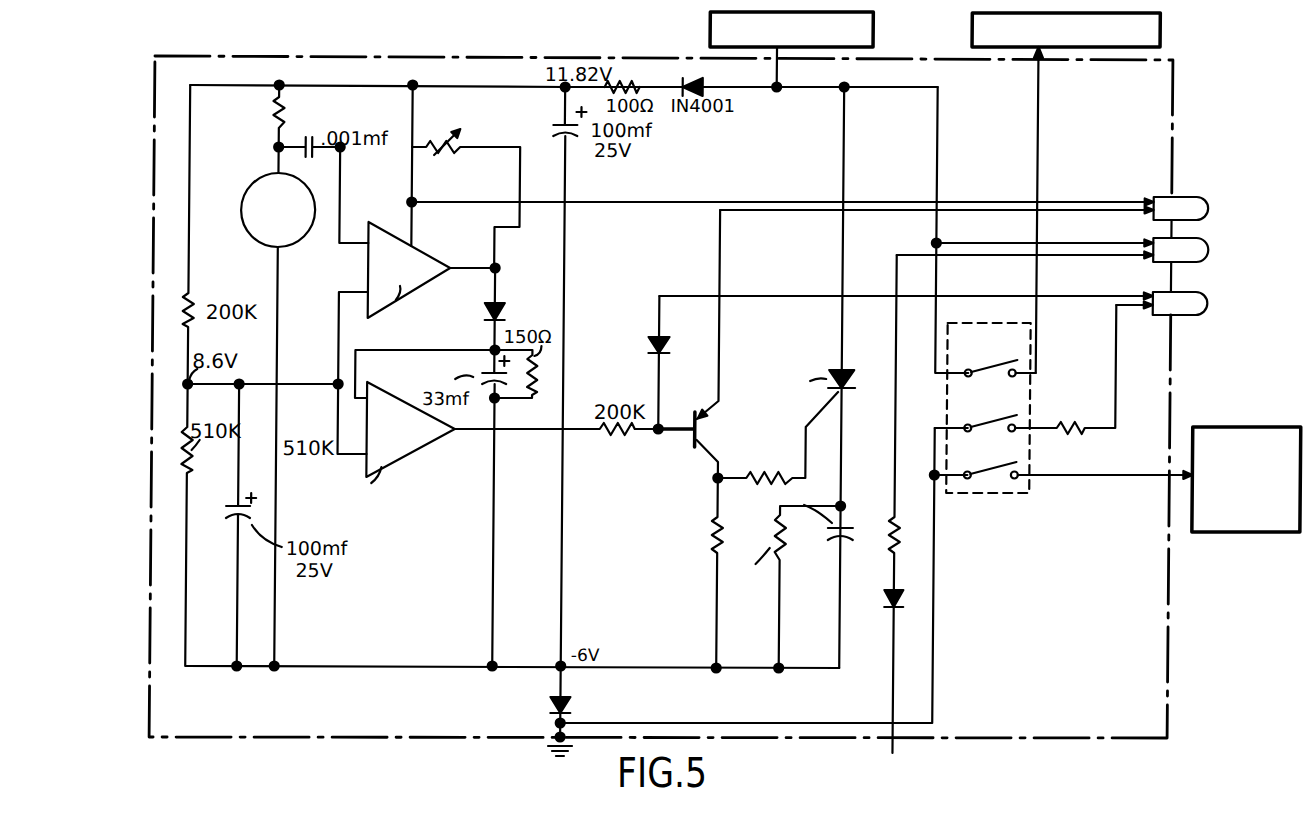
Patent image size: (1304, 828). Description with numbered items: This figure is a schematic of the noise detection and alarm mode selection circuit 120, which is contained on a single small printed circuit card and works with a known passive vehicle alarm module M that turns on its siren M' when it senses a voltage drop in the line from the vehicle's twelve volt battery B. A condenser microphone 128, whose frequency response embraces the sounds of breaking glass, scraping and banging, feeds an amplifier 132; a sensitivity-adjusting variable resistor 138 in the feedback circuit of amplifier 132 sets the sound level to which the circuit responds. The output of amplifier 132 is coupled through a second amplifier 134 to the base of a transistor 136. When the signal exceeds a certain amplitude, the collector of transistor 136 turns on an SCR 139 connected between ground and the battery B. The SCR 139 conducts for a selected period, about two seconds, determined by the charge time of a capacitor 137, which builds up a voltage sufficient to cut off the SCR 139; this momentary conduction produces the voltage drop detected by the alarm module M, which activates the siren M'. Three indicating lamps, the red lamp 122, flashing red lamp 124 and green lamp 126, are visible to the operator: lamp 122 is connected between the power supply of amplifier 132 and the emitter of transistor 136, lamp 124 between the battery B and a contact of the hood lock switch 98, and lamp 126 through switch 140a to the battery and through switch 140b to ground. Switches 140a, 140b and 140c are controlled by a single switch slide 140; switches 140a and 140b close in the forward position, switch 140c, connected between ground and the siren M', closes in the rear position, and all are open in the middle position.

The noise detection and alarm mode selection circuit 120 is at (290, 753).
The red indicating lamp 122 is at (1192, 195).
The flashing red indicating lamp 124 is at (1150, 238).
The green indicating lamp 126 is at (1150, 292).
The condenser microphone 128 is at (267, 247).
The amplifier 132 is at (447, 250).
The second amplifier 134 is at (403, 383).
The transistor 136 is at (675, 459).
The capacitor 137 is at (827, 543).
The sensitivity-adjusting variable resistor 138 is at (440, 142).
The SCR 139 is at (815, 367).
The switch slide 140 is at (1064, 427).
The switch 140a is at (990, 353).
The switch 140b is at (1072, 413).
The switch 140c is at (998, 481).
The hood lock switch 98 is at (904, 525).
The battery B is at (871, 30).
The alarm module M is at (1087, 193).
The siren M' is at (1245, 506).